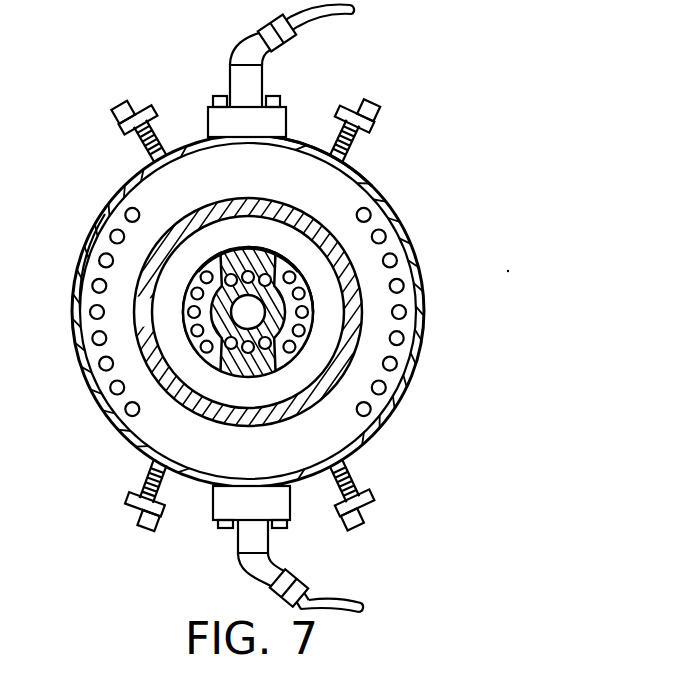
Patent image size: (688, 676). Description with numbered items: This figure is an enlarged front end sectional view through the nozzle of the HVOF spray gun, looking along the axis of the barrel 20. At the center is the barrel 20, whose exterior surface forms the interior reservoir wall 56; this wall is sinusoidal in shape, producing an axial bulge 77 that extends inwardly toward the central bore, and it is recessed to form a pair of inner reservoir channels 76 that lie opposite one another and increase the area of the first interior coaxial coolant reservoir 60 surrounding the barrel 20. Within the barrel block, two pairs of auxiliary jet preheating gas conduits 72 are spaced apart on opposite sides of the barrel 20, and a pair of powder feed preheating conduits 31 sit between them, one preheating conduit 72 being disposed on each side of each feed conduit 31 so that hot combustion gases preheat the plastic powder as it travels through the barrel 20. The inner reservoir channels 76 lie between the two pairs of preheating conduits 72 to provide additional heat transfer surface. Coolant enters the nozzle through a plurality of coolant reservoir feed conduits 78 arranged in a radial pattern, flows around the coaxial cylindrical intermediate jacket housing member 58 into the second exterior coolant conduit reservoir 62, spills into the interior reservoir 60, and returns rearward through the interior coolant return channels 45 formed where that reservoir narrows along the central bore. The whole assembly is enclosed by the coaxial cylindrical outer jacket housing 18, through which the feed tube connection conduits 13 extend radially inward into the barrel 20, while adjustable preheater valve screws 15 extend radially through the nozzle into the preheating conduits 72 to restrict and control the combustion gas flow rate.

The plastic substrate introduction feed tube connection conduit 13 is at (241, 81).
The adjustable preheater valve screw 15 is at (122, 104).
The coaxial cylindrical outer jacket housing 18 is at (133, 174).
The barrel 20 is at (250, 276).
The powder feed preheating conduit 31 is at (232, 278).
The interior coolant return channel 45 is at (198, 272).
The interior reservoir wall 56 is at (340, 380).
The coaxial cylindrical intermediate jacket housing member 58 is at (142, 345).
The first interior coaxial coolant reservoir 60 is at (364, 181).
The second exterior coolant conduit reservoir 62 is at (110, 300).
The auxiliary jet preheating gas conduit 72 is at (221, 255).
The inner reservoir channel 76 is at (186, 326).
The axial bulge 77 is at (307, 313).
The coolant reservoir feed conduit 78 is at (99, 259).